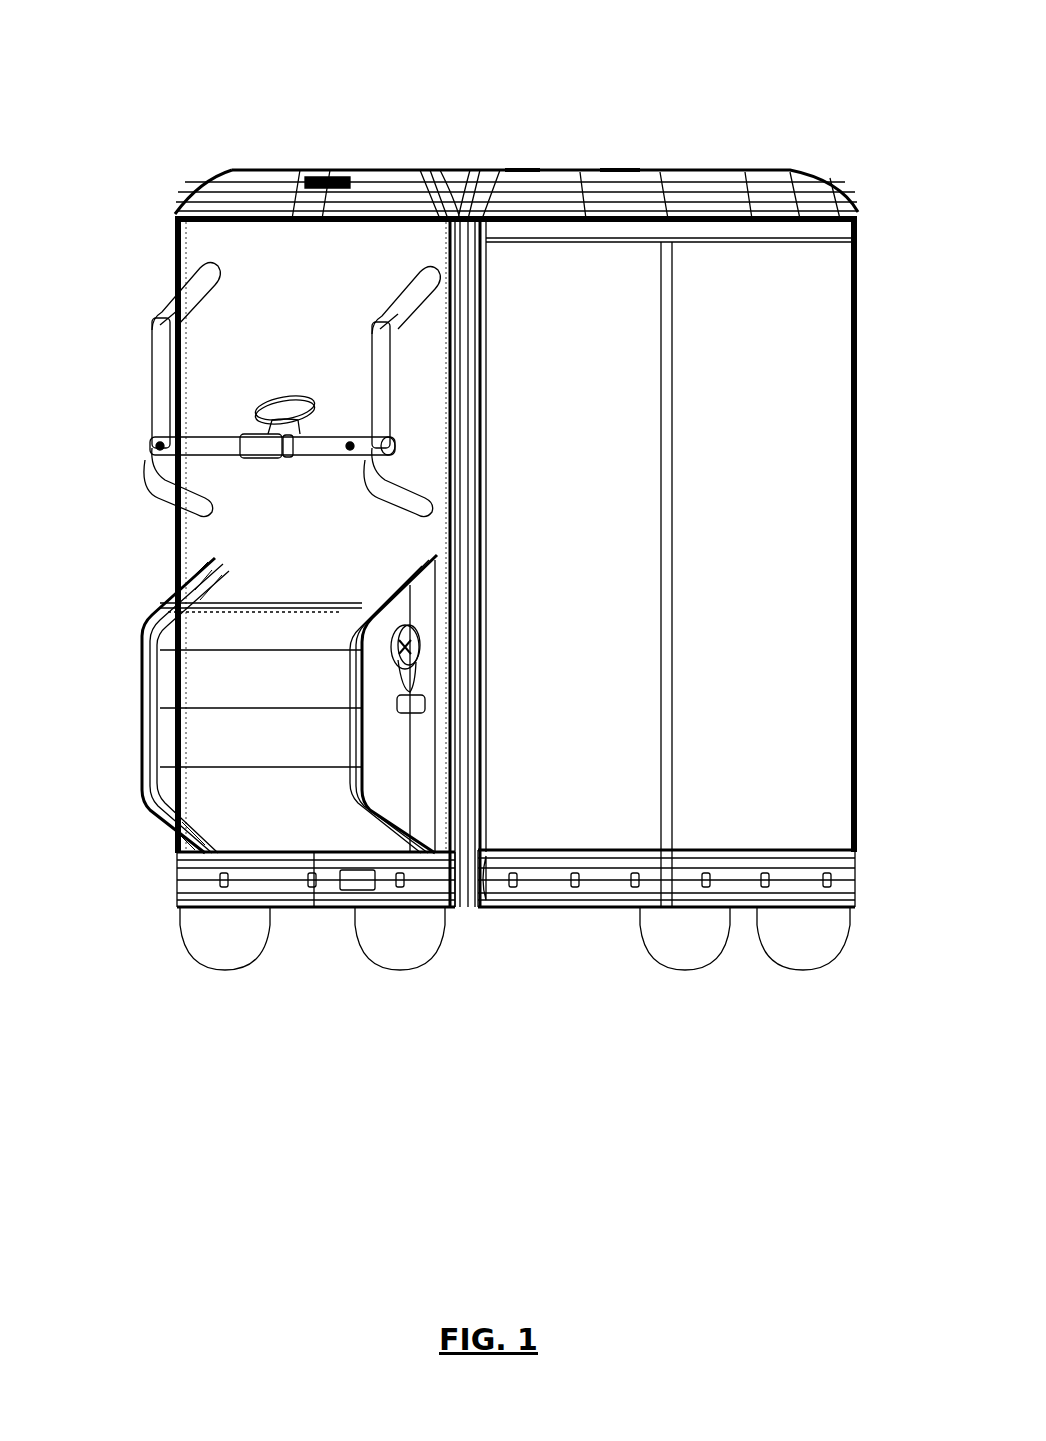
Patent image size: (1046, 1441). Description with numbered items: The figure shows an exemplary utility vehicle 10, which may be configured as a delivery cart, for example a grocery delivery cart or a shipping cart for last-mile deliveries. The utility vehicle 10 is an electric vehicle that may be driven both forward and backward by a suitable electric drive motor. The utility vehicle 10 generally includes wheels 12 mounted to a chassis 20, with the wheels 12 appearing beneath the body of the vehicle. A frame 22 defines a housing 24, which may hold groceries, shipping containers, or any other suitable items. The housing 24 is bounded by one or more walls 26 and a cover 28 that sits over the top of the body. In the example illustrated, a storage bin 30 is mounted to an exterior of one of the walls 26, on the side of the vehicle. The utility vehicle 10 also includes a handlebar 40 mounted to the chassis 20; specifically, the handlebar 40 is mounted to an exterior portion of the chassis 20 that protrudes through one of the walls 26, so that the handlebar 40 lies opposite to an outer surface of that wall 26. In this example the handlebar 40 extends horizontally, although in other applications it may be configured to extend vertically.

The utility vehicle 10 is at (212, 98).
The wheels 12 is at (400, 970).
The chassis 20 is at (152, 360).
The frame 22 is at (857, 415).
The housing 24 is at (793, 311).
The walls 26 is at (820, 383).
The cover 28 is at (690, 182).
The storage bin 30 is at (172, 660).
The handlebar 40 is at (205, 450).